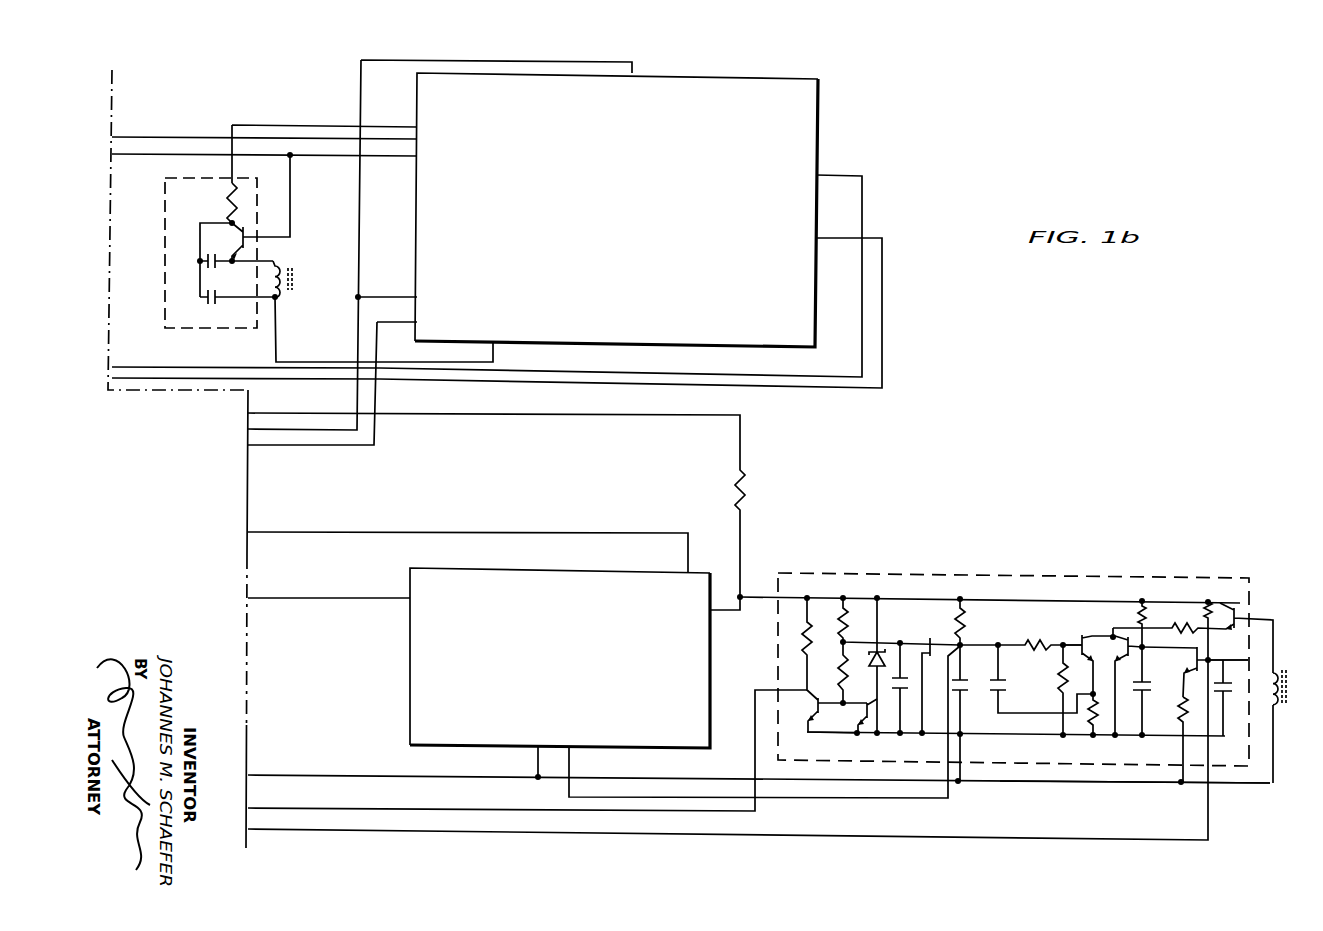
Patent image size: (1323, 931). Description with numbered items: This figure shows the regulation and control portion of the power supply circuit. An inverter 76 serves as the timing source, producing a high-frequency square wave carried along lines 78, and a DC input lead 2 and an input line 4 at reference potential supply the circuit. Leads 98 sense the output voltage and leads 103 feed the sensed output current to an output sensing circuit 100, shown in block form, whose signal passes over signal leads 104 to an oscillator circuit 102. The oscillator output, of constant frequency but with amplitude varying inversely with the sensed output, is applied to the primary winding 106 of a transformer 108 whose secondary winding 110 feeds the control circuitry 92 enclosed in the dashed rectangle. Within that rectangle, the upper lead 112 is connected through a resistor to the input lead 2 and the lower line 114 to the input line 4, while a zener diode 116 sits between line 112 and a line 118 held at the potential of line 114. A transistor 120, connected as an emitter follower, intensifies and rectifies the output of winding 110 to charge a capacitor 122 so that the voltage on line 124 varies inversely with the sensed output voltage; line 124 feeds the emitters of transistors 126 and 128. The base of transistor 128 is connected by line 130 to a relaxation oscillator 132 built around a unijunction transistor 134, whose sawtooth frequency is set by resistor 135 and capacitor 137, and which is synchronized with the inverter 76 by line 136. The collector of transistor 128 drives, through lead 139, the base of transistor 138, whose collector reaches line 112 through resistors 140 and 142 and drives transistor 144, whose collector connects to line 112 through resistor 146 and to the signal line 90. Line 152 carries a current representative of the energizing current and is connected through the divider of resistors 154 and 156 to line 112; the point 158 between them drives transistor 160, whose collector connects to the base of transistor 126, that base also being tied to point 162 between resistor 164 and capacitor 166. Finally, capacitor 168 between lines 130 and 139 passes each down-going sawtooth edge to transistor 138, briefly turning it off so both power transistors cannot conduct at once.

The DC input lead 2 is at (542, 416).
The input line 4 is at (385, 774).
The inverter 76 is at (410, 660).
The lines 78 is at (440, 531).
The signal line 90 is at (720, 812).
The control circuitry 92 is at (1073, 577).
The leads 98 is at (693, 387).
The output sensing circuit 100 is at (730, 189).
The oscillator circuit 102 is at (165, 222).
The leads 103 is at (155, 137).
The signal leads 104 is at (315, 125).
The primary winding 106 is at (280, 268).
The transformer 108 is at (290, 299).
The secondary winding 110 is at (1275, 707).
The upper lead 112 is at (1000, 597).
The lower line 114 is at (1074, 784).
The zener diode 116 is at (872, 670).
The line 118 is at (1005, 736).
The transistor 120 is at (1240, 612).
The capacitor 122 is at (1230, 673).
The line 124 is at (1163, 627).
The transistor 126 is at (1125, 648).
The transistor 128 is at (1080, 636).
The line 130 is at (1005, 642).
The relaxation oscillator 132 is at (915, 617).
The unijunction transistor 134 is at (941, 628).
The resistor 135 is at (965, 623).
The line 136 is at (903, 799).
The capacitor 137 is at (978, 674).
The transistor 138 is at (860, 717).
The lead 139 is at (1018, 713).
The resistor 140 is at (842, 663).
The resistor 142 is at (842, 618).
The transistor 144 is at (815, 712).
The resistor 146 is at (803, 634).
The line 152 is at (1012, 841).
The resistor 154 is at (1200, 712).
The resistor 156 is at (1220, 603).
The point 158 is at (1232, 689).
The transistor 160 is at (1194, 659).
The point 162 is at (1146, 648).
The resistor 164 is at (1140, 612).
The capacitor 166 is at (1145, 684).
The capacitor 168 is at (1007, 682).